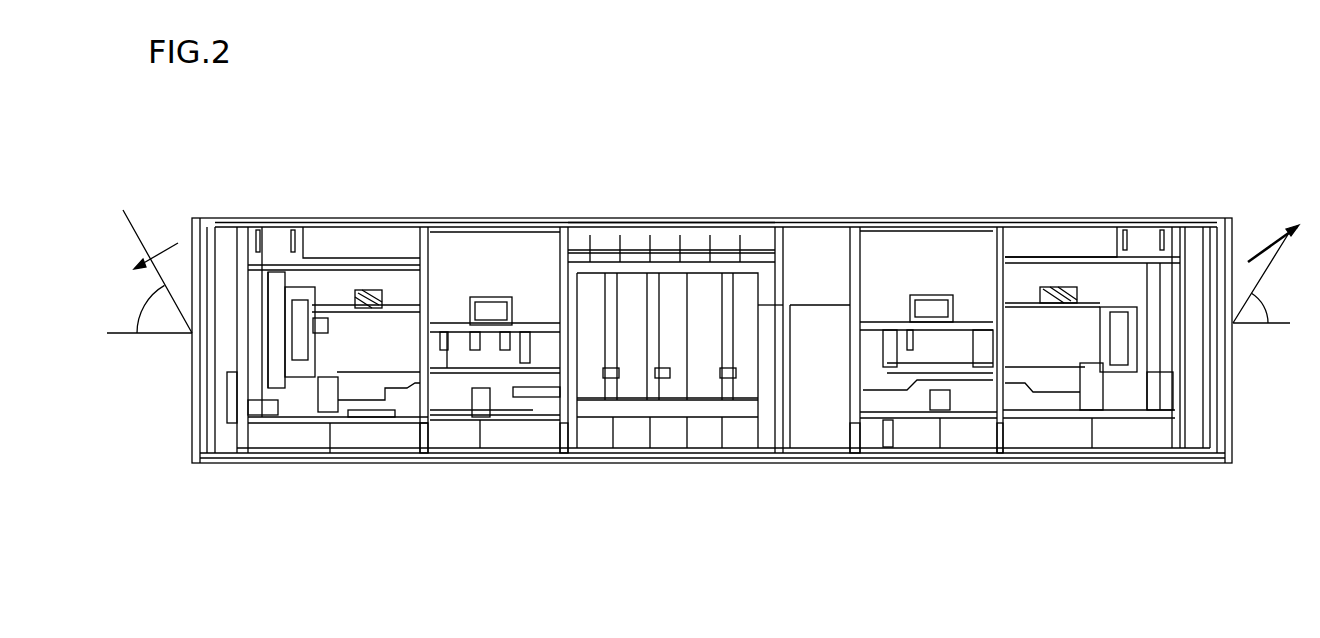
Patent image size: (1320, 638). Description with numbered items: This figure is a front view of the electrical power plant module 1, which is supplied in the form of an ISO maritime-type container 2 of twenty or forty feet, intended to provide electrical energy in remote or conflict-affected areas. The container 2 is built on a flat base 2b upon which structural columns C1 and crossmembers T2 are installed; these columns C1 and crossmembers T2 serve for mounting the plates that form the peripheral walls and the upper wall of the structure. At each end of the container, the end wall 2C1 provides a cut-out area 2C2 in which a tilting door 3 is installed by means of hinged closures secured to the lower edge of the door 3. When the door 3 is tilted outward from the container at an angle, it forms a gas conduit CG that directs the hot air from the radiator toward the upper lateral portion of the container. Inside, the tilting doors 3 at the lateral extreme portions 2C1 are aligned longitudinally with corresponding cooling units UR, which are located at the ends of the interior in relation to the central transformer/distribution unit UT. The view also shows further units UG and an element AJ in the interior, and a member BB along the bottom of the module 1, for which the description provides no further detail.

The electrical power plant module 1 is at (893, 200).
The container 2 is at (991, 186).
The flat base 2b is at (932, 465).
The end wall 2C1 is at (192, 440).
The cut-out area 2C2 is at (1233, 418).
The tilting door 3 is at (1291, 292).
The structural column C1 is at (565, 432).
The gas conduit CG is at (192, 243).
The cooling unit UR is at (276, 254).
The gas unit UG is at (481, 255).
The transformer/distribution unit UT is at (633, 218).
The adjusting member AJ is at (726, 197).
The crossmember T2 is at (823, 218).
The base beam BB is at (668, 483).